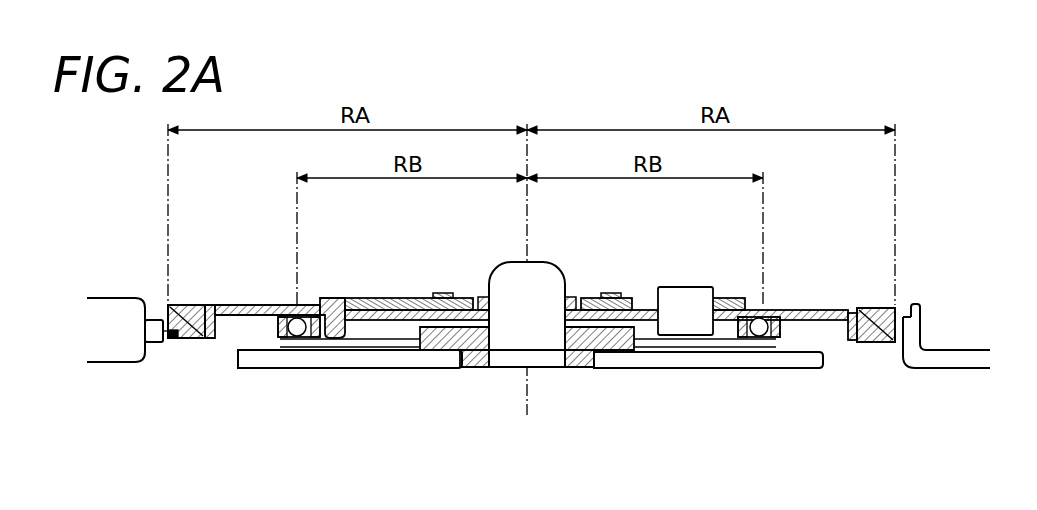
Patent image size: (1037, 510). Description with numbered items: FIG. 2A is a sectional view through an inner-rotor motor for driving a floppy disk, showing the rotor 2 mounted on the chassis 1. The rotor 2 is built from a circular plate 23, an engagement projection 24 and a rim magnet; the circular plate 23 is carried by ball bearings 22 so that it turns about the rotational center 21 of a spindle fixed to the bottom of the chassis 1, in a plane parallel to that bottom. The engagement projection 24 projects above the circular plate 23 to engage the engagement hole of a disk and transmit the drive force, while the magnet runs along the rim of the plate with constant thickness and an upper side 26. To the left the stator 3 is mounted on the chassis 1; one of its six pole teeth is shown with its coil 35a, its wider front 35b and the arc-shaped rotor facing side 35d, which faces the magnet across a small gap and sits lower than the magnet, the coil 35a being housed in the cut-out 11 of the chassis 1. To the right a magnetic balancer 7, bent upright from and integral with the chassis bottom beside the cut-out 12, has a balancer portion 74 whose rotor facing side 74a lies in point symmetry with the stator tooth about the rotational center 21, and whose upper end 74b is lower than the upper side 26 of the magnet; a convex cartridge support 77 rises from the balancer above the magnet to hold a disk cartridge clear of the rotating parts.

The chassis 1 is at (638, 362).
The rotor 2 is at (392, 293).
The stator 3 is at (127, 337).
The magnetic balancer 7 is at (953, 302).
The cut-out 11 is at (236, 362).
The cut-out 12 is at (826, 362).
The rotational center 21 is at (527, 400).
The ball bearing 22 is at (297, 345).
The circular plate 23 is at (285, 305).
The engagement projection 24 is at (688, 293).
The upper side of the magnet 26 is at (855, 316).
The coil 35a is at (103, 306).
The front 35b is at (150, 322).
The rotor facing side 35d is at (175, 340).
The magnetic balancer portion 74 is at (953, 302).
The rotor facing side 74a is at (906, 352).
The upper end 74b is at (918, 305).
The cartridge support 77 is at (916, 303).